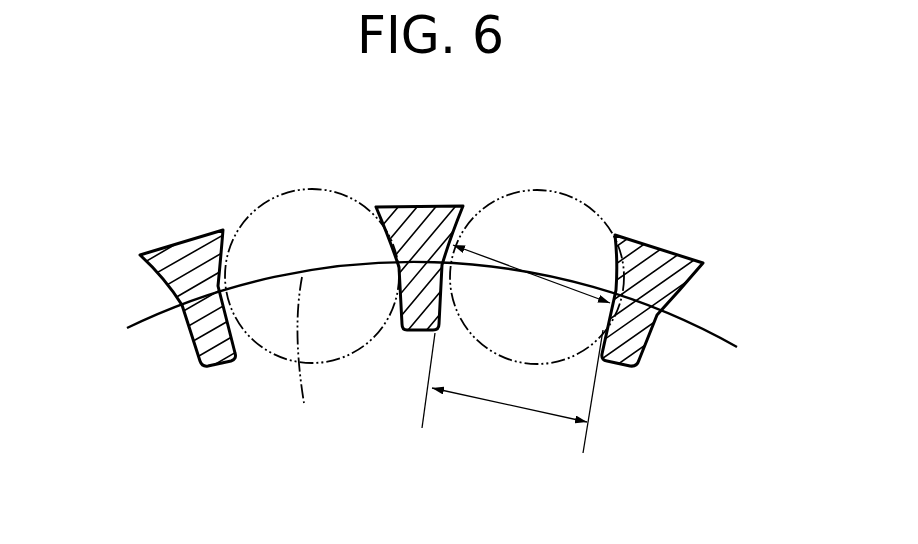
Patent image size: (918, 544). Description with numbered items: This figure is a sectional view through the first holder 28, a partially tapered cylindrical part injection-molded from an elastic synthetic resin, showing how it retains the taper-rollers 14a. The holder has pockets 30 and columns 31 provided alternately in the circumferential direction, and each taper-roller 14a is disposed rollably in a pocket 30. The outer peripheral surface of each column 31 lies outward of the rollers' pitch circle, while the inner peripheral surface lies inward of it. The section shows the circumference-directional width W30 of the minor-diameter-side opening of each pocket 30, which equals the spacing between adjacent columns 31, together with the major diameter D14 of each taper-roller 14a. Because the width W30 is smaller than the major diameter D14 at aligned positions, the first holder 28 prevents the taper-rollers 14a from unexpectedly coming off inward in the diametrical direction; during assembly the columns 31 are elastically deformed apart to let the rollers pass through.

The taper-roller 14a is at (497, 193).
The first holder 28 is at (640, 243).
The pocket 30 is at (393, 320).
The column 31 is at (207, 366).
The major diameter D14 is at (532, 275).
The circumference-directional width W30 is at (512, 407).